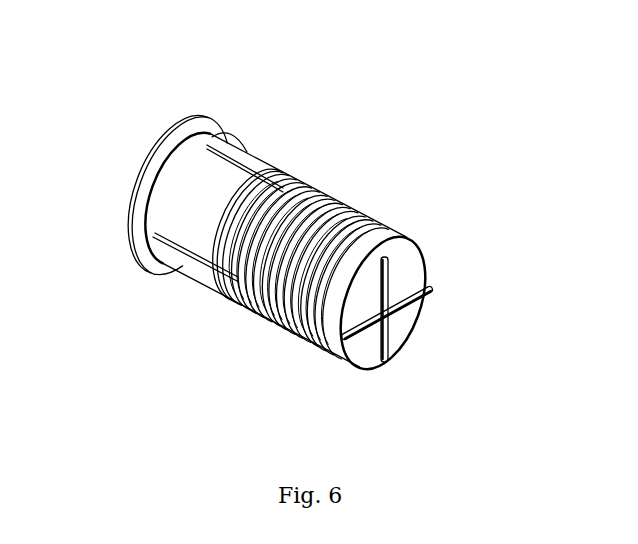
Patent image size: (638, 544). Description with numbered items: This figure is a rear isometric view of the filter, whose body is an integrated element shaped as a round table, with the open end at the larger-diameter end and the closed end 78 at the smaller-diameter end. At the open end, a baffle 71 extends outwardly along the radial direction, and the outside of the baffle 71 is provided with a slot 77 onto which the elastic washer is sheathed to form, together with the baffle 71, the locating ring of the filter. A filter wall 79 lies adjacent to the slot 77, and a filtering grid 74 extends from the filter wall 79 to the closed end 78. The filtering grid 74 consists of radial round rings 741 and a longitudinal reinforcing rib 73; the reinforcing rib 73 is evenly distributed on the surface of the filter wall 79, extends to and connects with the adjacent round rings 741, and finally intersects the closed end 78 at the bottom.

The baffle 71 is at (186, 128).
The slot 77 is at (227, 127).
The filter wall 79 is at (192, 201).
The longitudinal reinforcing rib 73 is at (180, 248).
The filtering grid 74 is at (273, 325).
The radial round rings 741 is at (320, 348).
The closed end 78 is at (405, 275).